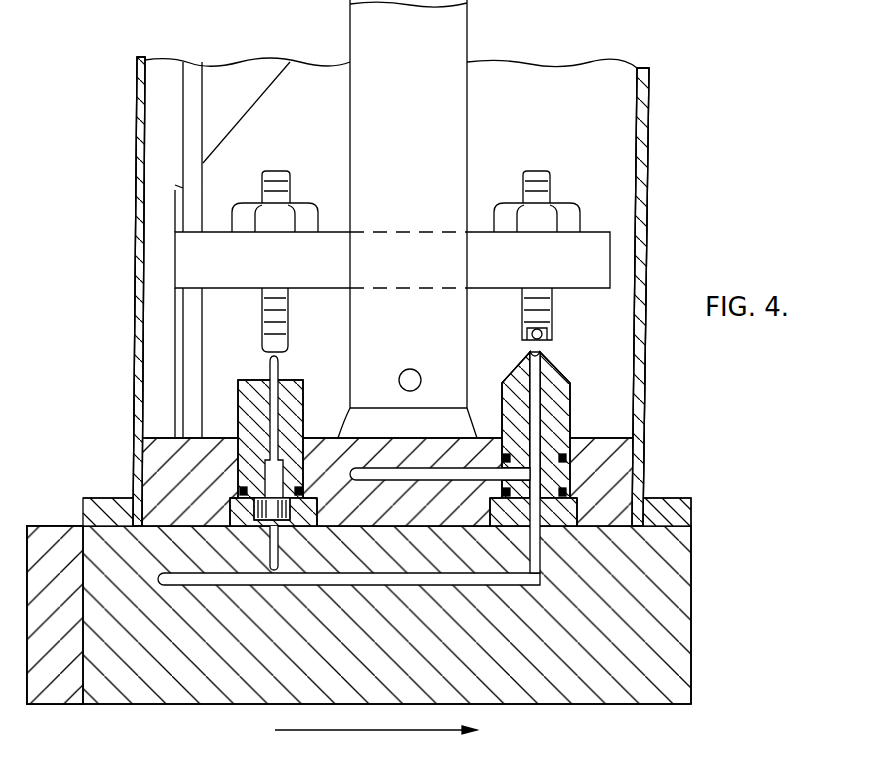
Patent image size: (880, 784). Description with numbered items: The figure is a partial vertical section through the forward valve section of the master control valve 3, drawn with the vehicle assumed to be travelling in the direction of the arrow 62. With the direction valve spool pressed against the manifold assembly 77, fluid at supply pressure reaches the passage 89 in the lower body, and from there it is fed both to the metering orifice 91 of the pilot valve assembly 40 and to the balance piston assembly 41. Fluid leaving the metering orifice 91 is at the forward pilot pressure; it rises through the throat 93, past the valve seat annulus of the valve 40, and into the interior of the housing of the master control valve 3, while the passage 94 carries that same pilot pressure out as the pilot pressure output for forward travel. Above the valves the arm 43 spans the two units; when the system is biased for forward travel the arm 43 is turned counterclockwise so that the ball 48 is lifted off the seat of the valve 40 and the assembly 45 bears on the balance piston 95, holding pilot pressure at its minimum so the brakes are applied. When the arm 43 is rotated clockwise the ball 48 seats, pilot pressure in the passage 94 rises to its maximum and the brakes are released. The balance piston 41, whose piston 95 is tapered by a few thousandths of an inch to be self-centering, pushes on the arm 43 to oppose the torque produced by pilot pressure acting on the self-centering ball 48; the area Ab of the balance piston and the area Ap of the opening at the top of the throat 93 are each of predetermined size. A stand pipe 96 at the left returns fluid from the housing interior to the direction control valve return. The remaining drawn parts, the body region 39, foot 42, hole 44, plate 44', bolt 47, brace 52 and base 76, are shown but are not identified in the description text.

The master control valve 3 is at (124, 198).
The pedestal block 39 is at (603, 455).
The pilot valve assembly 40 is at (568, 352).
The balance piston assembly 41 is at (250, 359).
The column foot 42 is at (455, 428).
The arm 43 is at (455, 110).
The hole 44 is at (425, 373).
The plate 44' is at (392, 274).
The assembly 45 is at (262, 313).
The adjusting bolt 47 is at (552, 308).
The ball 48 is at (532, 340).
The brace 52 is at (260, 98).
The arrow 62 is at (318, 732).
The base block 76 is at (680, 582).
The manifold assembly 77 is at (55, 700).
The passage 89 is at (405, 588).
The metering orifice 91 is at (548, 520).
The throat 93 is at (535, 398).
The passage 94 is at (420, 481).
The balance piston 95 is at (270, 366).
The stand pipe 96 is at (190, 94).
The area of the balance piston Ab is at (284, 378).
The area of the throat opening Ap is at (528, 352).